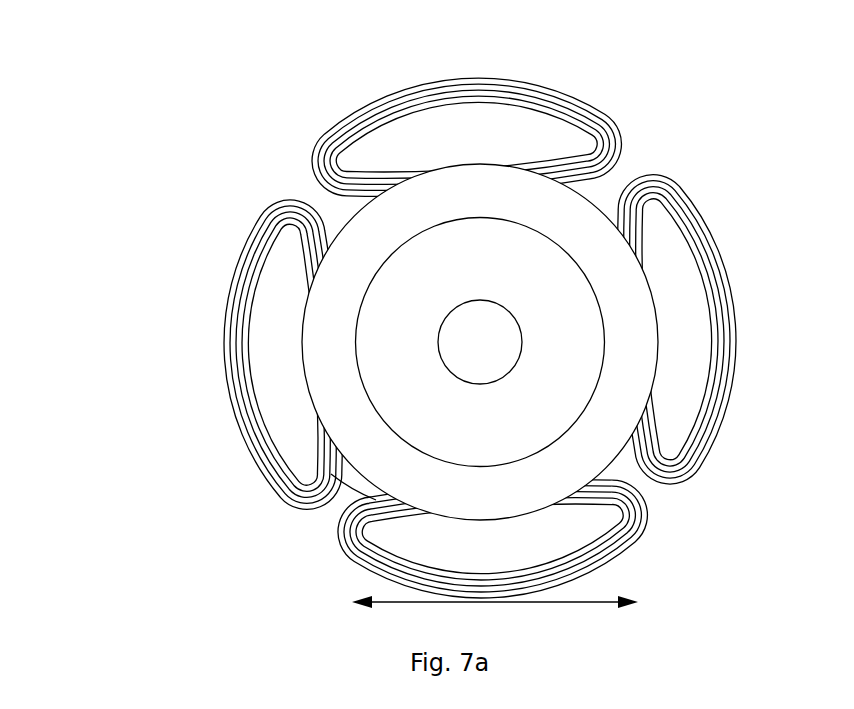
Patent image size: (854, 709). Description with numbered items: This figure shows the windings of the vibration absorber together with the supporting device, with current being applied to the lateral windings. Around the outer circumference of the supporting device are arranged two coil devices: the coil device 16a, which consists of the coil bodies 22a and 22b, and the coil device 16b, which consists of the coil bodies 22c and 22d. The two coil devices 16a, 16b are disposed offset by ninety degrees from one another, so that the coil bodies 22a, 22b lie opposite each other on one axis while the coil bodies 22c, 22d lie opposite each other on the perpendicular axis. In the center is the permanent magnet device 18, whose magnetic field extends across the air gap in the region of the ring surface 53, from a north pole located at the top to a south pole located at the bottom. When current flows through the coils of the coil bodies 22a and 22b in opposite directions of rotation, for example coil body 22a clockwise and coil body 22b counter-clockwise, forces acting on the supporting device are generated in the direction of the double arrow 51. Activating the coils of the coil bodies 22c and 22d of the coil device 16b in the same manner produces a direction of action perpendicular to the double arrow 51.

The permanent magnet device 18 is at (338, 230).
The coil body 22a is at (246, 232).
The coil body 22b is at (678, 180).
The coil body 22c is at (642, 527).
The coil body 22d is at (530, 87).
The coil device 16a is at (200, 333).
The coil device 16b is at (537, 115).
The ring surface 53 is at (350, 481).
The double arrow 51 is at (551, 603).